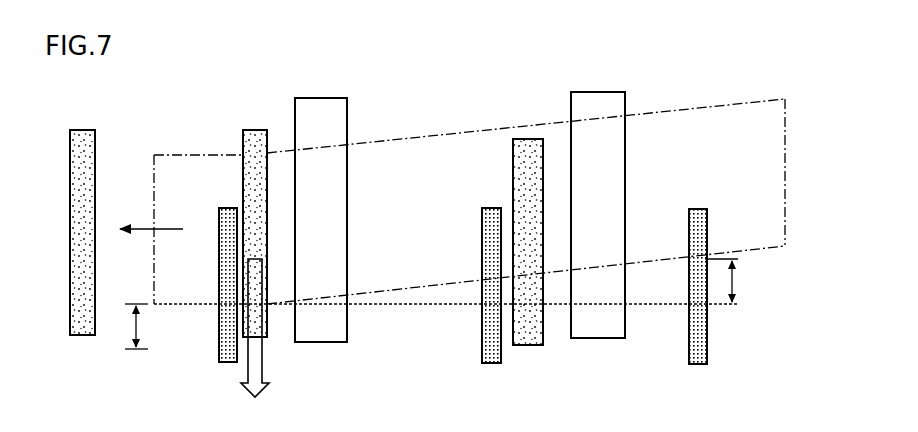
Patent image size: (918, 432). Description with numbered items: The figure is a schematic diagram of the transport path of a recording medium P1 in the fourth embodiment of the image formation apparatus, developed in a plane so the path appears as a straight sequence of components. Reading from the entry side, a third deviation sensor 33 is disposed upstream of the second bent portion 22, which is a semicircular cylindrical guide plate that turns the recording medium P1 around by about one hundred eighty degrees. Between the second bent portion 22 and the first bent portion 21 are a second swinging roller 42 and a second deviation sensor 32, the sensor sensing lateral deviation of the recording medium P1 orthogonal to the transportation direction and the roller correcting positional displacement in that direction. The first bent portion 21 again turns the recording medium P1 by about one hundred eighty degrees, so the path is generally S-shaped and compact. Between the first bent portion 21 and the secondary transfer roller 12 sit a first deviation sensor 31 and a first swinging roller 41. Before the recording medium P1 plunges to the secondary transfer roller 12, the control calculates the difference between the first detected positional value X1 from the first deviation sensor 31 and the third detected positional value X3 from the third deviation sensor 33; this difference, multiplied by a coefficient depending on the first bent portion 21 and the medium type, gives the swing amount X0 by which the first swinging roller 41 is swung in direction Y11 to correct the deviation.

The secondary transfer roller 12 is at (85, 128).
The first swinging roller 41 is at (256, 128).
The first bent portion 21 is at (322, 112).
The first deviation sensor 31 is at (230, 365).
The swinging direction of first swinging roller Y11 is at (263, 370).
The second swinging roller 42 is at (530, 153).
The second bent portion 22 is at (597, 110).
The second deviation sensor 32 is at (491, 366).
The third deviation sensor 33 is at (695, 366).
The recording medium P1 is at (762, 98).
The amount of swinging of first swinging roller X0 is at (125, 326).
The first detected positional value X1 is at (228, 307).
The third detected positional value X3 is at (708, 263).